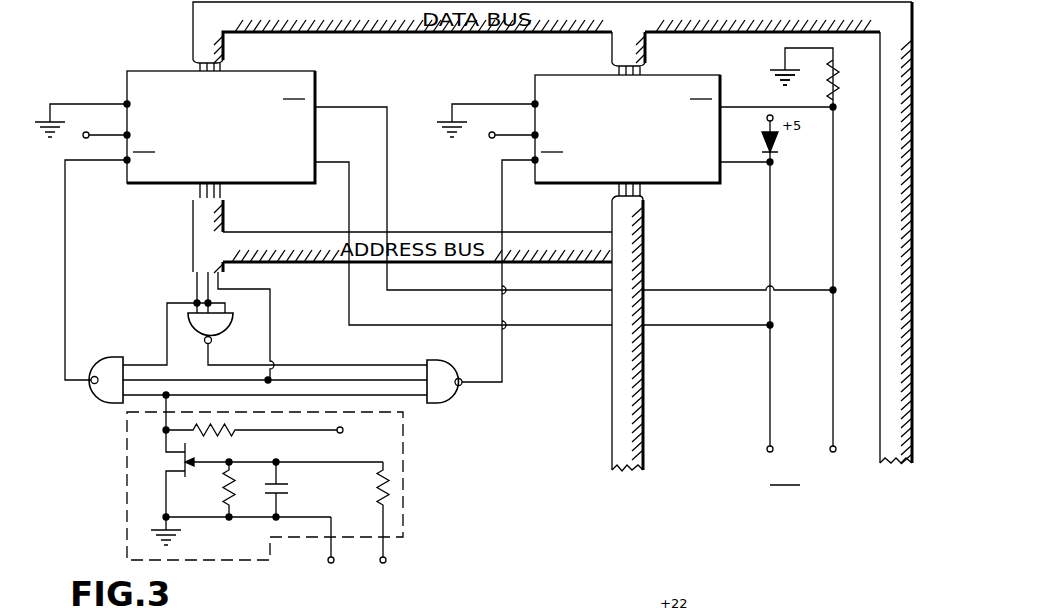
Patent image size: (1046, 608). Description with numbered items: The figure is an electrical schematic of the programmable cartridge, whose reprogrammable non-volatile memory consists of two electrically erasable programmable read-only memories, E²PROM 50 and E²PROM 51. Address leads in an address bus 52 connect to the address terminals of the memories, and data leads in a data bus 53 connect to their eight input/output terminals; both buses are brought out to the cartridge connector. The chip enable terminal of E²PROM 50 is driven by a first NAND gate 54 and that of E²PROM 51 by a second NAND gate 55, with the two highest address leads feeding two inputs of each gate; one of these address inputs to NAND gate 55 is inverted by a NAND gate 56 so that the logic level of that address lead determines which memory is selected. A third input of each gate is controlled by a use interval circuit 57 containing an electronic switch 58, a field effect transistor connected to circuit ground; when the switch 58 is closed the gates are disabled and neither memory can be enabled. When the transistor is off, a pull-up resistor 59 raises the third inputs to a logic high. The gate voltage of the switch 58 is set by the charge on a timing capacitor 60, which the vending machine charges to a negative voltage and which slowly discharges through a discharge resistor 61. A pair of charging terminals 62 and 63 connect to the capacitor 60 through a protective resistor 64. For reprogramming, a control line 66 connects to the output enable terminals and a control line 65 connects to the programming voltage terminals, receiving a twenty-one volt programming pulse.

The E²PROM 50 is at (306, 71).
The E²PROM 51 is at (565, 75).
The address bus 52 is at (612, 372).
The data bus 53 is at (900, 463).
The first NAND gate 54 is at (100, 356).
The second NAND gate 55 is at (447, 396).
The NAND gate 56 is at (233, 322).
The use interval circuit 57 is at (403, 490).
The electronic switch 58 is at (165, 463).
The pull-up resistor 59 is at (232, 438).
The timing capacitor 60 is at (293, 487).
The discharge resistor 61 is at (225, 500).
The charging terminal 62 is at (386, 563).
The charging terminal 63 is at (334, 563).
The protective resistor 64 is at (378, 500).
The control line 65 is at (773, 452).
The control line 66 is at (836, 452).